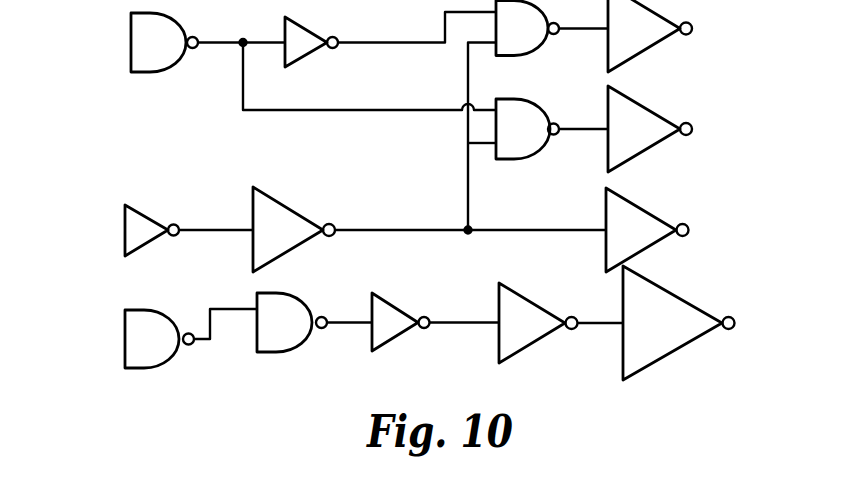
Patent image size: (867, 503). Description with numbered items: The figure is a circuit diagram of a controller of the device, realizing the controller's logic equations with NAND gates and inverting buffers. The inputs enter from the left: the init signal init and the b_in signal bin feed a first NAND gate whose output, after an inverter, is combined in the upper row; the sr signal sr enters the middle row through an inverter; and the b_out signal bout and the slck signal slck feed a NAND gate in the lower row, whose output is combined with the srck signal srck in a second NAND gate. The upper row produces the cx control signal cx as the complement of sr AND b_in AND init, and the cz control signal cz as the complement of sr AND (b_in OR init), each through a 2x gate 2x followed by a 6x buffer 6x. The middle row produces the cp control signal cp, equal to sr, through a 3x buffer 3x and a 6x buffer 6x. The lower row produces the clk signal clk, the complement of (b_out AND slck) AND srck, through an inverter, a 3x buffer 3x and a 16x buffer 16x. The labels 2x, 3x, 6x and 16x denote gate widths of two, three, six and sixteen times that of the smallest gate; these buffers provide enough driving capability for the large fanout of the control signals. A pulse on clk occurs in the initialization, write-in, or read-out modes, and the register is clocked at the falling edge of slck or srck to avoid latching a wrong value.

The init signal init is at (131, 26).
The b_in signal bin is at (131, 57).
The sr signal sr is at (125, 230).
The b_out signal bout is at (125, 323).
The slck signal slck is at (125, 351).
The srck signal srck is at (257, 337).
The cx control signal cx is at (692, 28).
The cz control signal cz is at (692, 129).
The cp control signal cp is at (689, 230).
The clk signal clk is at (735, 323).
The 2x gate 2x is at (552, 80).
The 3x buffer 3x is at (415, 275).
The 6x buffer 6x is at (649, 136).
The 16x buffer 16x is at (679, 323).